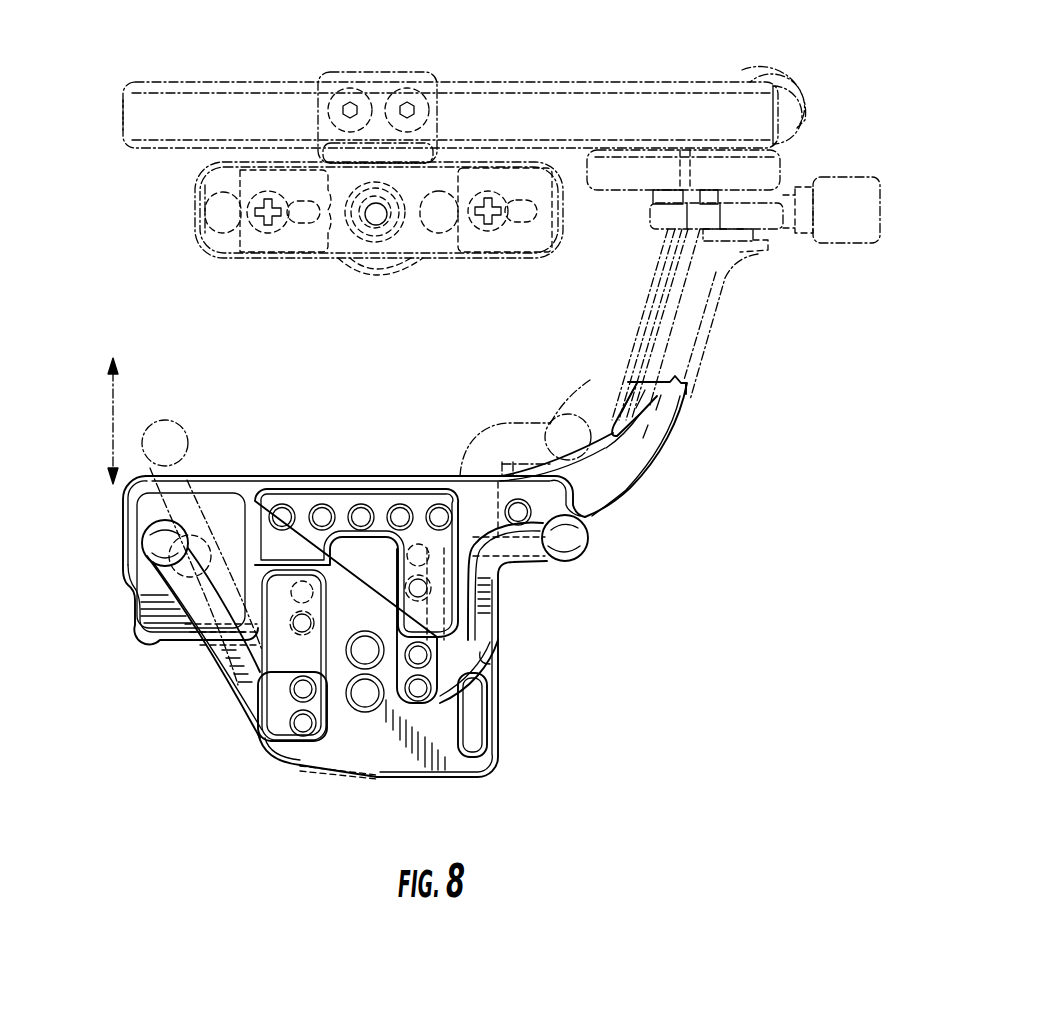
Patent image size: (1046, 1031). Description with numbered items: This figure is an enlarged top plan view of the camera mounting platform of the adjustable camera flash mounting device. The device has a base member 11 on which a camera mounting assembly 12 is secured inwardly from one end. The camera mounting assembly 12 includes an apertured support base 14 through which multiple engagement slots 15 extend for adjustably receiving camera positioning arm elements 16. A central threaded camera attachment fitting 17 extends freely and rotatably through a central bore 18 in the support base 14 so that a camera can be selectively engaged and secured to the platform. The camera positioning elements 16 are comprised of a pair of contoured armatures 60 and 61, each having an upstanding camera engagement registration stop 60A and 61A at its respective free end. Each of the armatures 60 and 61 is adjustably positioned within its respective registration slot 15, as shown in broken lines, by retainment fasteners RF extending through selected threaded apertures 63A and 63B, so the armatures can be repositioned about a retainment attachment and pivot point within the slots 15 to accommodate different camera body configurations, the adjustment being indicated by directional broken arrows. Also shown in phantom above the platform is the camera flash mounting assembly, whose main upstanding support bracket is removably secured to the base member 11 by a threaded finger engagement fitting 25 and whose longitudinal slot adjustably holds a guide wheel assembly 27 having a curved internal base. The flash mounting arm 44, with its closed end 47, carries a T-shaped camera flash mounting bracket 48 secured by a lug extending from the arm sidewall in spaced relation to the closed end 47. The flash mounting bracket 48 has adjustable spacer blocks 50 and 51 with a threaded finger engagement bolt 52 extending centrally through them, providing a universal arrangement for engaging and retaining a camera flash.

The base member 11 is at (725, 332).
The camera mounting assembly 12 is at (525, 703).
The apertured support base 14 is at (385, 758).
The engagement slots 15 is at (455, 563).
The camera positioning arm elements 16 is at (180, 657).
The central threaded camera attachment fitting 17 is at (365, 695).
The central bore 18 is at (363, 650).
The retainment fasteners RF is at (300, 724).
The threaded finger engagement fitting 25 is at (830, 177).
The guide wheel assembly 27 is at (792, 150).
The flash mounting arm 44 is at (590, 75).
The closed end 47 is at (122, 128).
The T-shaped camera flash mounting bracket 48 is at (462, 268).
The adjustable spacer block 50 is at (500, 240).
The adjustable spacer block 51 is at (260, 238).
The threaded finger engagement bolt 52 is at (375, 214).
The contoured armature 60 is at (504, 422).
The camera engagement registration stop 60A is at (570, 413).
The contoured armature 61 is at (200, 472).
The camera engagement registration stop 61A is at (172, 425).
The threaded aperture 63A is at (306, 592).
The threaded aperture 63B is at (420, 596).